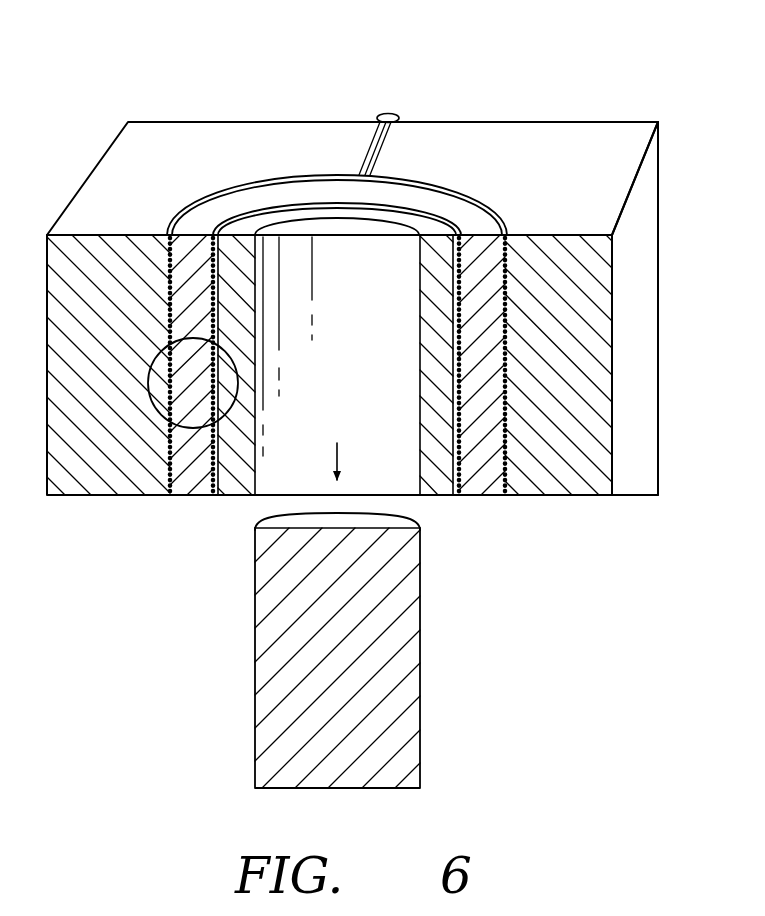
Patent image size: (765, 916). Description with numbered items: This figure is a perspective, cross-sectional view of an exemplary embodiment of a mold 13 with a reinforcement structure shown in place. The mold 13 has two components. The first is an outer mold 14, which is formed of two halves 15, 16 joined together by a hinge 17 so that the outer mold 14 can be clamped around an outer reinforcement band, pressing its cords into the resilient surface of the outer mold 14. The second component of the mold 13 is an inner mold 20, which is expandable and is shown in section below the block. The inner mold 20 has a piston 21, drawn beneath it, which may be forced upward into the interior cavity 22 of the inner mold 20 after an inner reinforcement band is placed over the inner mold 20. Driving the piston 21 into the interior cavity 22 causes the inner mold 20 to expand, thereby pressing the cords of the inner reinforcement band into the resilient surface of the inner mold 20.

The mold 13 is at (241, 82).
The outer mold 14 is at (345, 276).
The half of outer mold 15 is at (612, 132).
The half of outer mold 16 is at (118, 168).
The hinge 17 is at (388, 112).
The inner mold 20 is at (238, 478).
The piston 21 is at (388, 678).
The interior cavity 22 is at (390, 430).